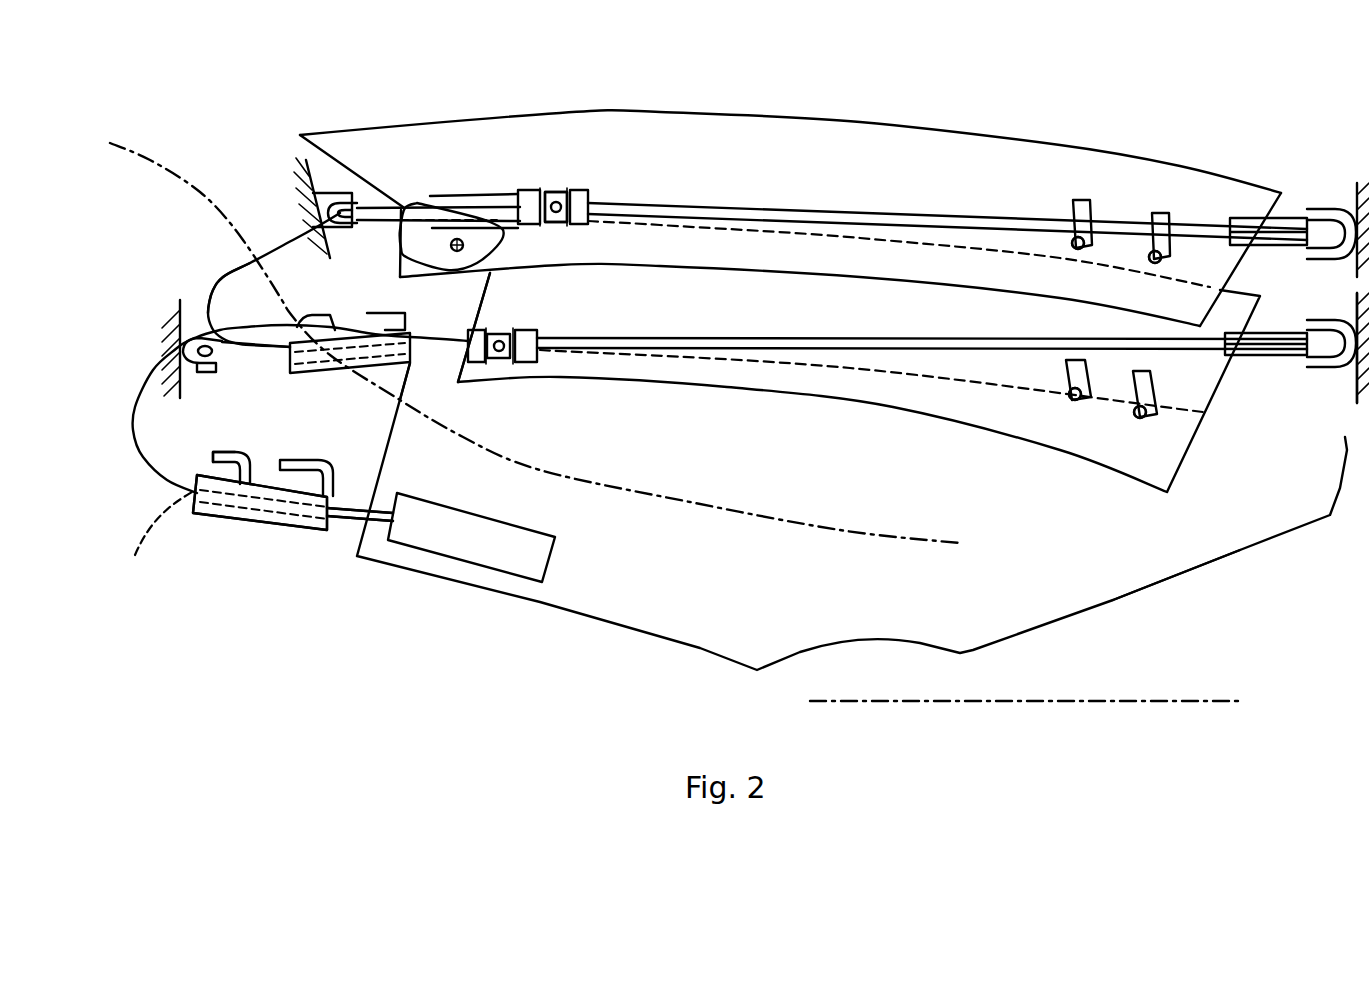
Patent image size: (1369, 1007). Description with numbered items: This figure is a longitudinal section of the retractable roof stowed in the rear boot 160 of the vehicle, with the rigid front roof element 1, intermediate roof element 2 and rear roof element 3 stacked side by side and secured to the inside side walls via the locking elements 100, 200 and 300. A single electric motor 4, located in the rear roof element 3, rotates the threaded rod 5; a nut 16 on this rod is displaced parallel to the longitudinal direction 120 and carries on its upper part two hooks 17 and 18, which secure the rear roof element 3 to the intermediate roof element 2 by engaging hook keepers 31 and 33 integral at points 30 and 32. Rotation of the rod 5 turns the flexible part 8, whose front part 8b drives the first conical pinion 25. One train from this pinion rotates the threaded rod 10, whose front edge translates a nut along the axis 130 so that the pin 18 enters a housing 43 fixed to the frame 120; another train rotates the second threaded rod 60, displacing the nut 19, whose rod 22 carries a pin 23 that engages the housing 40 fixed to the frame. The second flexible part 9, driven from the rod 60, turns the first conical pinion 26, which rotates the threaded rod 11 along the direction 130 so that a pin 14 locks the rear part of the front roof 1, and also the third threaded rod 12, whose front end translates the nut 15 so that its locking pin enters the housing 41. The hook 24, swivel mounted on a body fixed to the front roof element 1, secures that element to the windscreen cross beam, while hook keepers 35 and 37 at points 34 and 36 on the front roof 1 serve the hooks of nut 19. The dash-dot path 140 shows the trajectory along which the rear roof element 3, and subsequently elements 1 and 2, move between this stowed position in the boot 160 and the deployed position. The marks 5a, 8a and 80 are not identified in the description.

The front roof element 1 is at (1055, 167).
The intermediate roof element 2 is at (1196, 390).
The rear roof element 3 is at (658, 606).
The electric motor 4 is at (483, 553).
The threaded rod 5 is at (307, 513).
The spring end 5a is at (156, 530).
The flexible part 8 is at (143, 449).
The cable end 8a is at (192, 490).
The front part of the flexible part 8b is at (443, 345).
The second flexible part 9 is at (211, 278).
The threaded rod 10 is at (785, 337).
The threaded rod 11 is at (790, 207).
The third threaded rod 12 is at (370, 207).
The pin 14 is at (1298, 220).
The nut 15 is at (350, 193).
The nut 16 is at (223, 513).
The hook 17 is at (237, 460).
The hook 18 is at (310, 466).
The nut 19 is at (390, 362).
The rod 22 is at (227, 348).
The pin 23 is at (205, 368).
The hook 24 is at (404, 228).
The first conical pinion 25 is at (497, 328).
The first conical pinion 26 is at (556, 190).
The point 30 is at (1147, 378).
The hook keeper 31 is at (1140, 415).
The point 32 is at (1088, 364).
The hook keeper 33 is at (1073, 398).
The point 34 is at (1160, 215).
The hook keeper 35 is at (1162, 258).
The point 36 is at (1083, 202).
The hook keeper 37 is at (1077, 249).
The housing 40 is at (183, 335).
The housing 41 is at (1335, 207).
The housing 43 is at (1337, 368).
The second threaded rod 60 is at (445, 352).
The bottom edge 80 is at (1113, 604).
The locking element 100 is at (473, 189).
The frame 120 is at (301, 168).
The longitudinal axis 130 is at (1087, 704).
The path 140 is at (735, 505).
The boot 160 is at (937, 97).
The locking element 200 is at (473, 368).
The locking element 300 is at (315, 542).